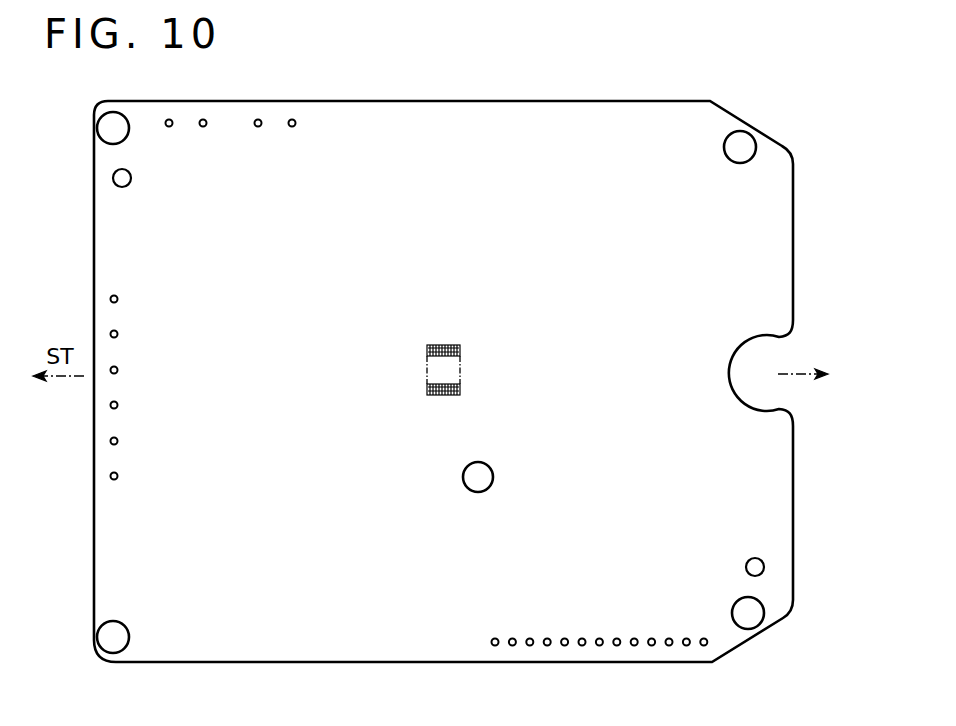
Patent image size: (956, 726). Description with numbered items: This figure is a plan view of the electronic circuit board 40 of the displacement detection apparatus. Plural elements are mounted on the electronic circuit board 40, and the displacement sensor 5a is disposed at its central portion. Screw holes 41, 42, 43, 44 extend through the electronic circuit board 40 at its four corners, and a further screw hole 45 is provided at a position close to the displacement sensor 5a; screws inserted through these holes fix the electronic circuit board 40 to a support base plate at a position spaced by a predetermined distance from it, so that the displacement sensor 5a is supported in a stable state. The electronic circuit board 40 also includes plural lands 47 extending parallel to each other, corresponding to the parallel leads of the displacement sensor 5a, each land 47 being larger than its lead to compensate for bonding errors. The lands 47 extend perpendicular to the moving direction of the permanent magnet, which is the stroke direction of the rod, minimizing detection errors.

The electronic circuit board 40 is at (118, 236).
The screw hole 41 is at (740, 146).
The screw hole 42 is at (748, 613).
The screw hole 43 is at (113, 637).
The screw hole 44 is at (112, 128).
The screw hole 45 is at (478, 477).
The lands 47 is at (455, 346).
The displacement sensor 5a is at (446, 368).